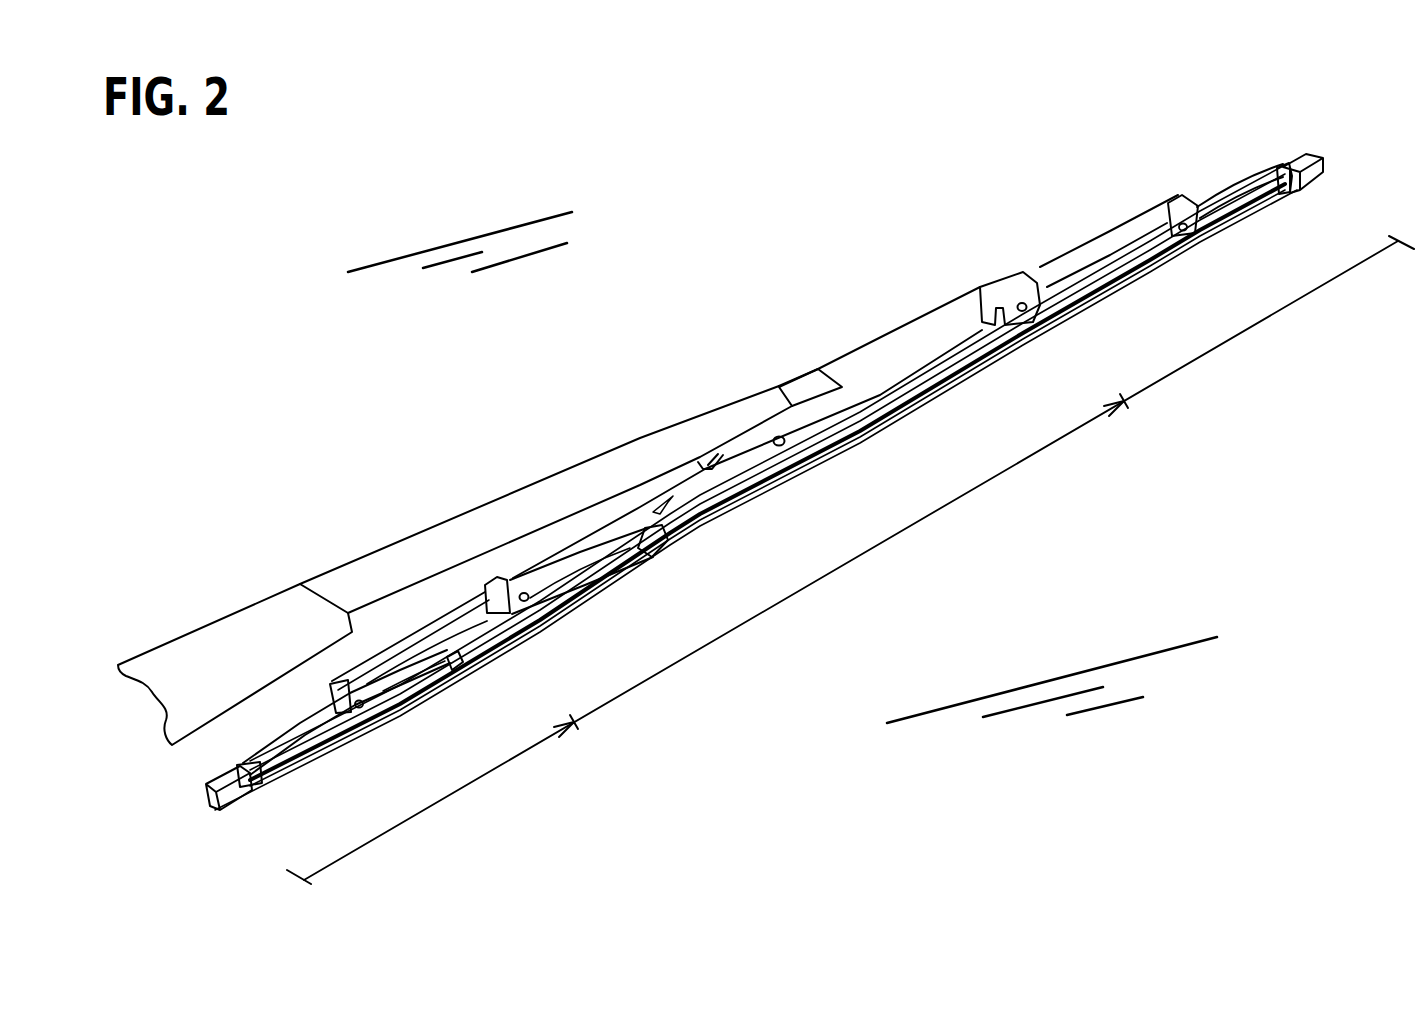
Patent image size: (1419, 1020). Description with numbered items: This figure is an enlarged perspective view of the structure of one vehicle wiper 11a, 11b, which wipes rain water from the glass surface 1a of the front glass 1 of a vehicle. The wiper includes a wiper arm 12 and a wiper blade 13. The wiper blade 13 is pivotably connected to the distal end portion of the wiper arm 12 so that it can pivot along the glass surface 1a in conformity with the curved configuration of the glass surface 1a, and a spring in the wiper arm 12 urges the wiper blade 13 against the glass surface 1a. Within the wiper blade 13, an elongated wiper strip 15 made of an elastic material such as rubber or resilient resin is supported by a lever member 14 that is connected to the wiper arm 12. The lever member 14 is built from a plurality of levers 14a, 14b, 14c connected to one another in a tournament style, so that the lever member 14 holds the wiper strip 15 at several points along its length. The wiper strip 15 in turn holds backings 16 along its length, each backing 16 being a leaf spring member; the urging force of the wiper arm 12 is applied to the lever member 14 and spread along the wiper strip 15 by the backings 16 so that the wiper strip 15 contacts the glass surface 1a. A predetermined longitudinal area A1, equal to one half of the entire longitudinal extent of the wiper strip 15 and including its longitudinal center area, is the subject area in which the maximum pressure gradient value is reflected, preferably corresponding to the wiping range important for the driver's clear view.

The front glass 1 is at (737, 191).
The glass surface 1a is at (1136, 522).
The vehicle wiper 11a is at (398, 345).
The vehicle wiper 11b is at (825, 506).
The wiper arm 12 is at (377, 567).
The wiper blade 13 is at (888, 324).
The lever member 14 is at (979, 283).
The lever 14a is at (737, 467).
The lever 14b is at (490, 617).
The lever 14c is at (308, 728).
The wiper strip 15 is at (207, 812).
The backing 16 is at (397, 706).
The longitudinal area A1 is at (861, 559).